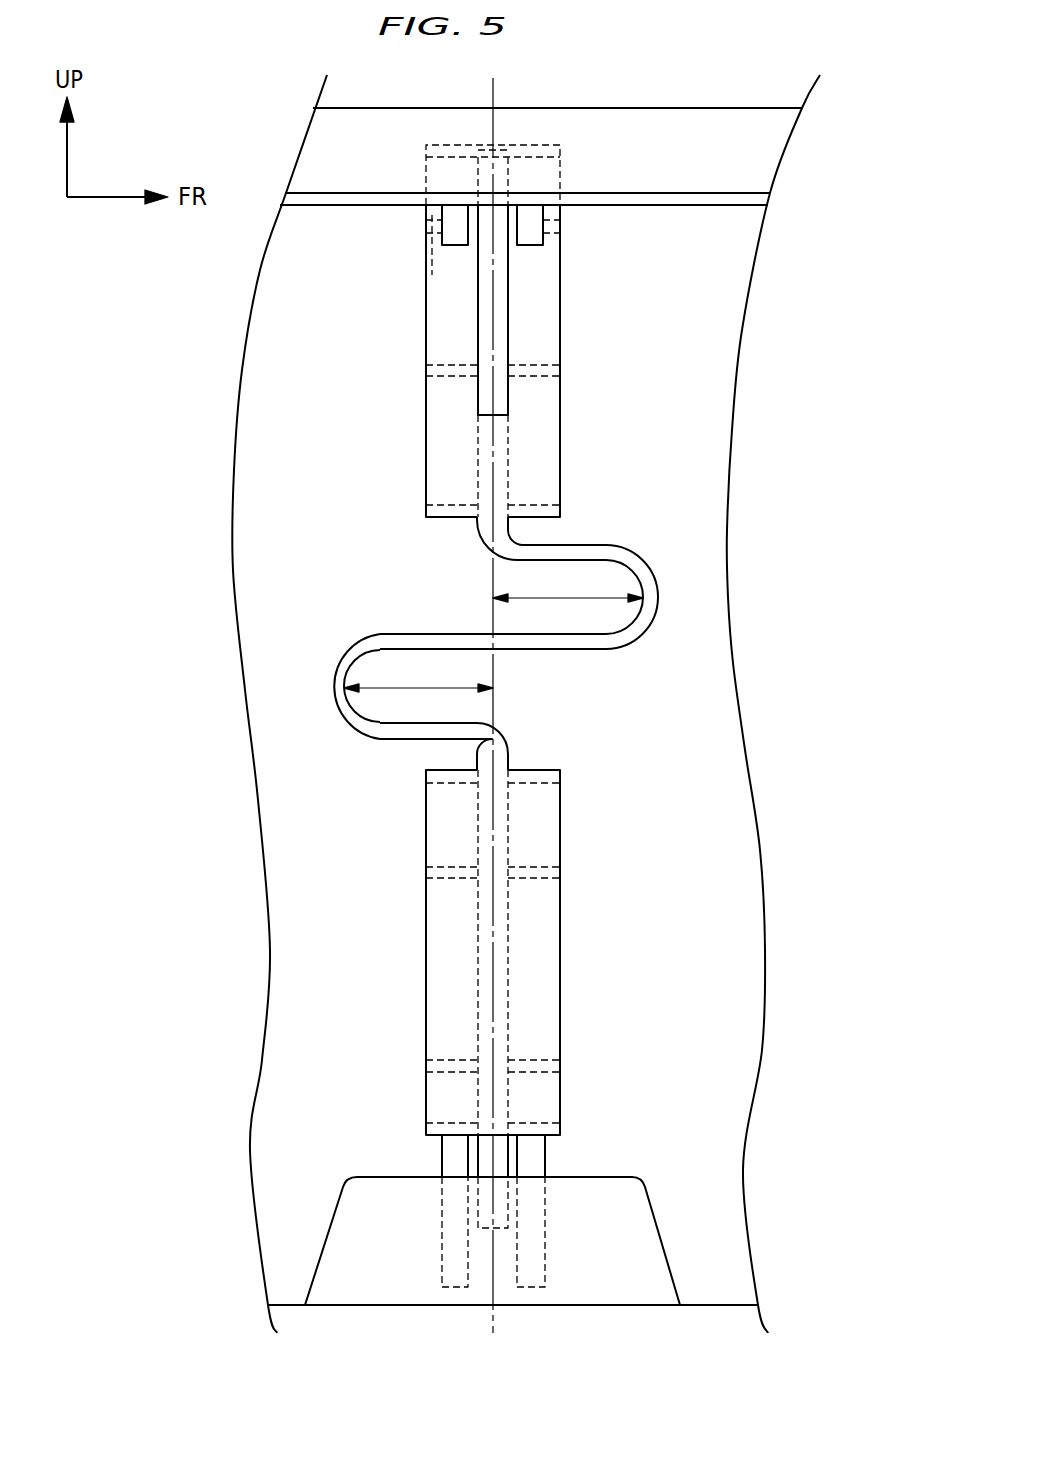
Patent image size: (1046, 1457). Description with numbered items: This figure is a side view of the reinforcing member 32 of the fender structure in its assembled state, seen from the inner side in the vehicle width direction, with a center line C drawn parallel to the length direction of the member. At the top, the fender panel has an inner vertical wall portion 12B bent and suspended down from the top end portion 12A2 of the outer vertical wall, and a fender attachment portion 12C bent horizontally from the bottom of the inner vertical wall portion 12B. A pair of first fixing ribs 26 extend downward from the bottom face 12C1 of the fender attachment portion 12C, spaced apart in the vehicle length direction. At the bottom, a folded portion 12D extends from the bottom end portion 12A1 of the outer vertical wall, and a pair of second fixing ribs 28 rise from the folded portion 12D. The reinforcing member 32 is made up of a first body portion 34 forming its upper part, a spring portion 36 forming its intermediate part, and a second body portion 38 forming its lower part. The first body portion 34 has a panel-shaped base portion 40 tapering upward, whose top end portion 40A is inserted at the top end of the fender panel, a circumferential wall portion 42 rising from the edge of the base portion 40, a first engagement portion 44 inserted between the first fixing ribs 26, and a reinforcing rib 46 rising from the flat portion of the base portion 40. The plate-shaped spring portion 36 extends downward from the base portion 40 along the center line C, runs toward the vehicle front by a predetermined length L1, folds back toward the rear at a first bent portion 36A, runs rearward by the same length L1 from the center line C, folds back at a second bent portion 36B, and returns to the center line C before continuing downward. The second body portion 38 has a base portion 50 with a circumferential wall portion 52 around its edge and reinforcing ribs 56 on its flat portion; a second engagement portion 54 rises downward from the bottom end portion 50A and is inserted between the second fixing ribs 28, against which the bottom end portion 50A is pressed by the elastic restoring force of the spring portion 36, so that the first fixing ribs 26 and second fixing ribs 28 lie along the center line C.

The bottom end portion 12A1 is at (710, 1290).
The top end portion 12A2 is at (652, 108).
The inner vertical wall portion 12B is at (757, 143).
The fender attachment portion 12C is at (705, 193).
The bottom face 12C1 is at (697, 207).
The folded portion 12D is at (635, 1233).
The first fixing ribs 26 is at (540, 245).
The second fixing ribs 28 is at (545, 1257).
The reinforcing member 32 is at (534, 641).
The first body portion 34 is at (580, 393).
The spring portion 36 is at (534, 622).
The first bent portion 36A is at (660, 597).
The second bent portion 36B is at (330, 655).
The second body portion 38 is at (580, 828).
The base portion 40 is at (510, 420).
The top end portion 40A is at (485, 150).
The circumferential wall portion 42 is at (535, 452).
The first engagement portion 44 is at (512, 325).
The reinforcing rib 46 is at (458, 365).
The base portion 50 is at (510, 922).
The bottom end portion 50A is at (500, 1100).
The circumferential wall portion 52 is at (533, 830).
The second engagement portion 54 is at (500, 1158).
The reinforcing ribs 56 is at (458, 1057).
The center line C is at (495, 97).
The predetermined length L1 is at (442, 684).